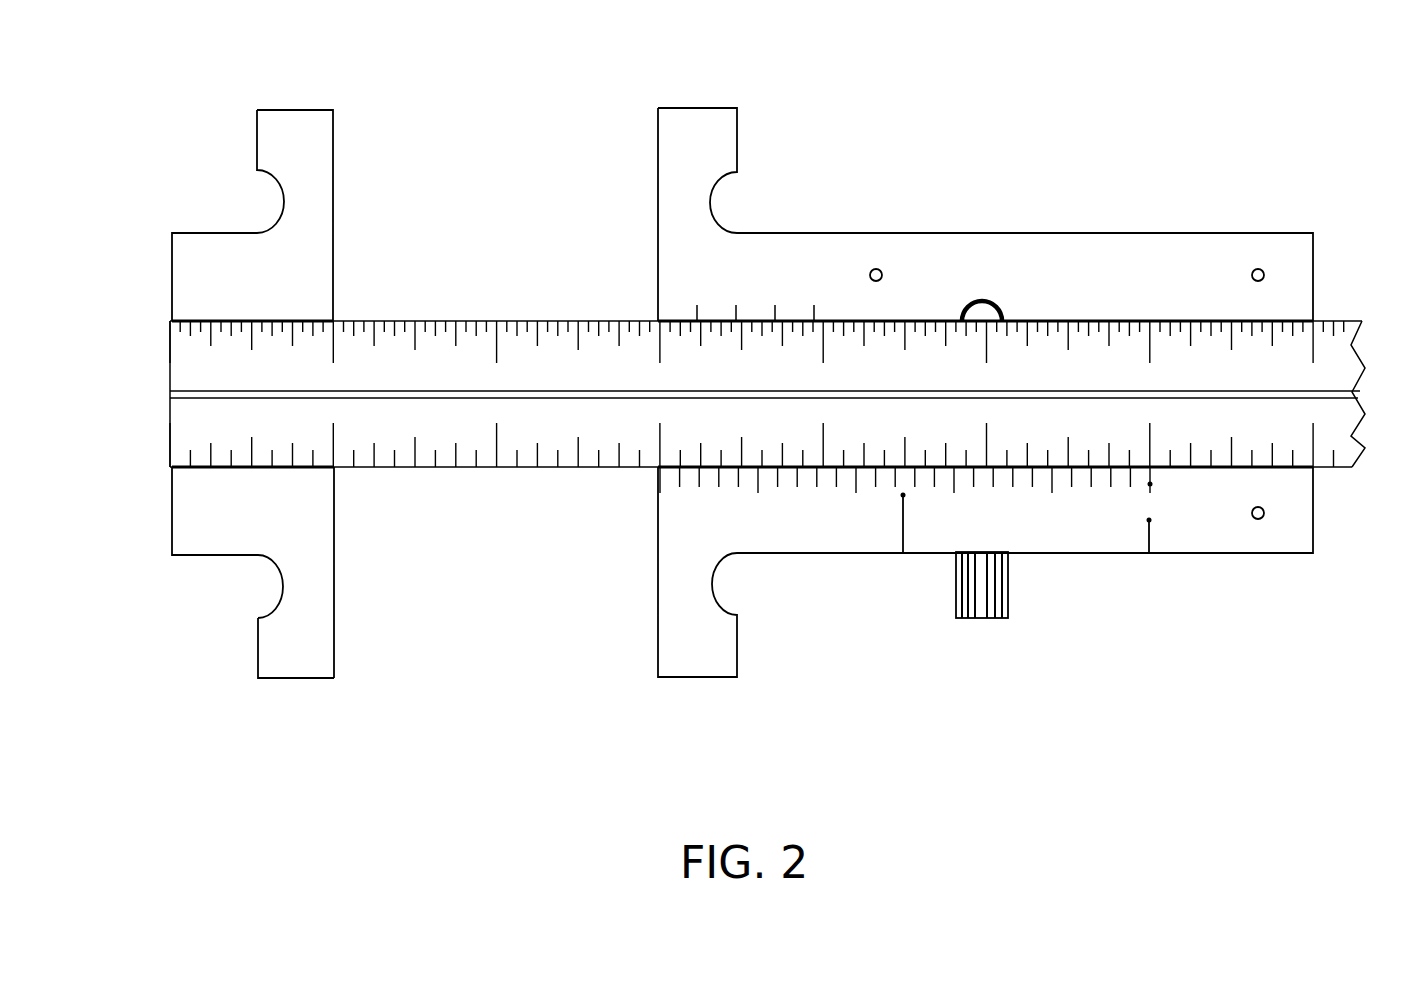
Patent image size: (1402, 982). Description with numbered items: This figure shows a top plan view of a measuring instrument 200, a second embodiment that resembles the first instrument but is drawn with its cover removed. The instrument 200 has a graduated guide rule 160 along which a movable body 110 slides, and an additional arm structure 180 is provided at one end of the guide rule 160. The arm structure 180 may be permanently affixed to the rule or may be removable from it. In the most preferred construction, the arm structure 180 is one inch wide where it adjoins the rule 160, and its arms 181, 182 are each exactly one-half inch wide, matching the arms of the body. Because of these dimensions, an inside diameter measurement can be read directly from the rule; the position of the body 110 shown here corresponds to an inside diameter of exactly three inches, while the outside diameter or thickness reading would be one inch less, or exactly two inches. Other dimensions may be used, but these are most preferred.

The instrument 200 is at (1134, 58).
The body 110 is at (1226, 524).
The guide rule 160 is at (525, 423).
The arm structure 180 is at (274, 532).
The arm 181 is at (274, 668).
The arm 182 is at (286, 123).